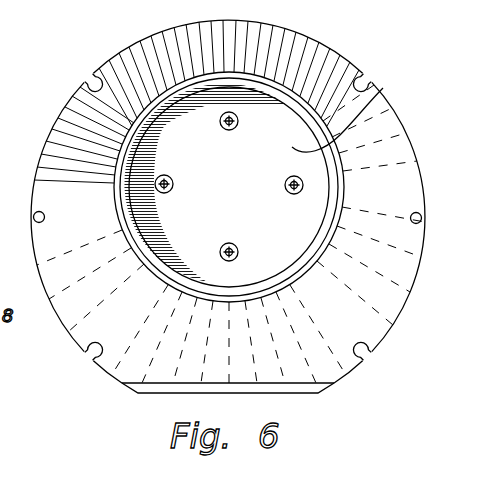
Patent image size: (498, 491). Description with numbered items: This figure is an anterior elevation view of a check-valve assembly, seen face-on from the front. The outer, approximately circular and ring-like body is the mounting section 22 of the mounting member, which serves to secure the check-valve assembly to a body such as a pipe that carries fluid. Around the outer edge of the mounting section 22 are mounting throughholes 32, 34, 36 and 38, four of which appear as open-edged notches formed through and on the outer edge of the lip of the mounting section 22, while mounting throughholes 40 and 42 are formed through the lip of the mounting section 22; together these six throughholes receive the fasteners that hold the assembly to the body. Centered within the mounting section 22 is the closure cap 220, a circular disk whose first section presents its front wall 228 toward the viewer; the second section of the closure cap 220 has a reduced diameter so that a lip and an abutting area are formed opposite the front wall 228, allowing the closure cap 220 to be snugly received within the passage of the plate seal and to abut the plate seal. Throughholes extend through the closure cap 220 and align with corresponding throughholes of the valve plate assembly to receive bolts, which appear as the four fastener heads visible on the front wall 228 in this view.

The mounting section 22 is at (92, 314).
The closure cap 220 is at (280, 110).
The front wall 228 is at (383, 88).
The mounting throughhole 32 is at (365, 82).
The mounting throughhole 34 is at (89, 78).
The mounting throughhole 38 is at (92, 351).
The mounting throughhole 40 is at (367, 354).
The mounting throughhole 36 is at (39, 208).
The mounting throughhole 42 is at (410, 225).